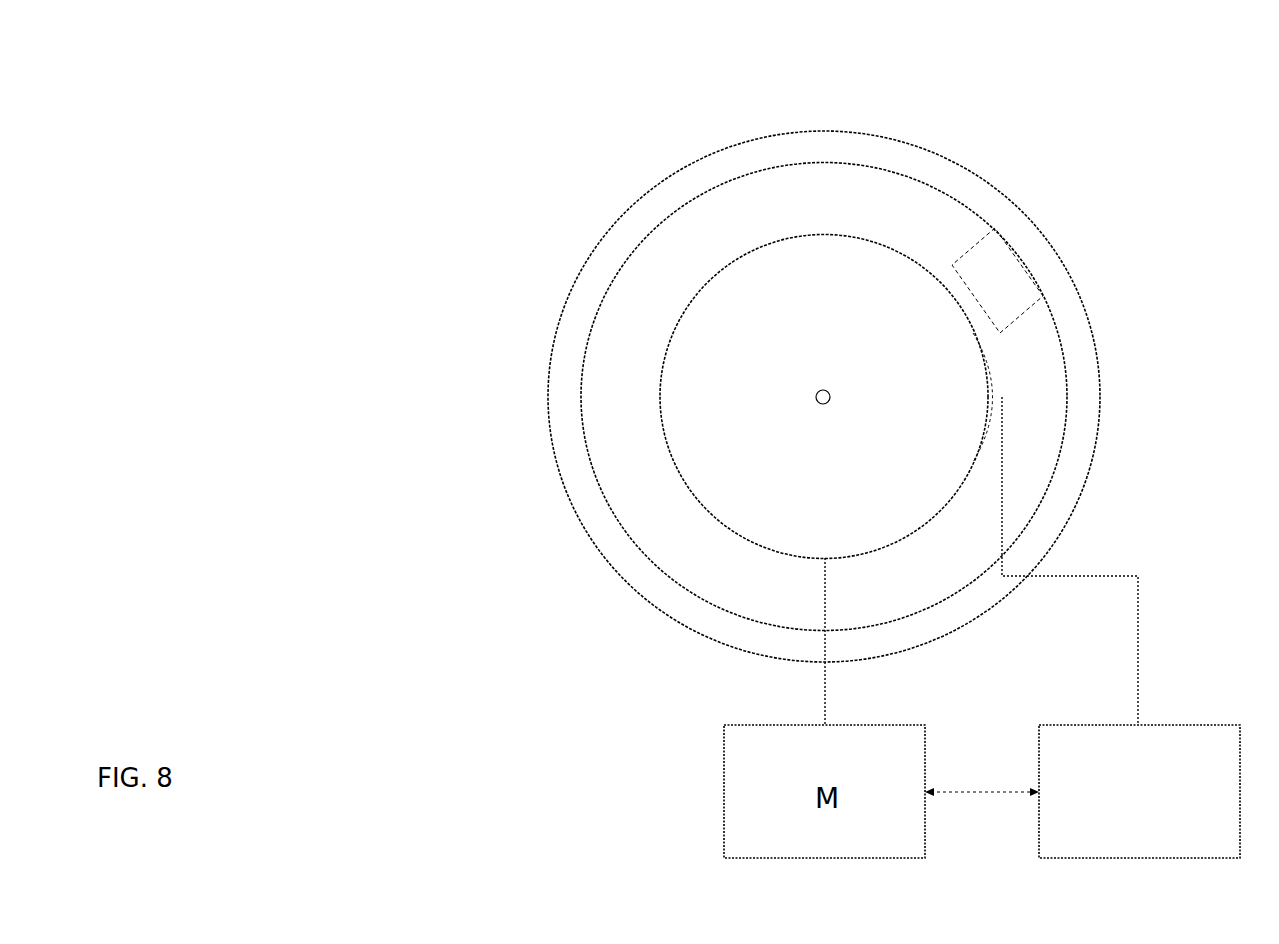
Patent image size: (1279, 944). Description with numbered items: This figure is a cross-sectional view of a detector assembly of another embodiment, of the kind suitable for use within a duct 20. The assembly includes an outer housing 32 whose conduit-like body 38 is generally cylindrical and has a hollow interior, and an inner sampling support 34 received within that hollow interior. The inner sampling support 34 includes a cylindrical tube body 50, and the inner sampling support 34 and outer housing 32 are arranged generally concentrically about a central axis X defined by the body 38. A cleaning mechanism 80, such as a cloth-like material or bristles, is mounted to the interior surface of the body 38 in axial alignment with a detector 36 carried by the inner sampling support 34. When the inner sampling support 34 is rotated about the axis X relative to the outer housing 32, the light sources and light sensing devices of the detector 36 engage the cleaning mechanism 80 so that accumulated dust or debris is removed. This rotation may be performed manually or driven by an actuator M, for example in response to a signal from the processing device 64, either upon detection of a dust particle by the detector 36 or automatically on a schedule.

The duct 20 is at (438, 119).
The outer housing 32 is at (522, 398).
The body 38 is at (619, 232).
The inner sampling support 34 is at (668, 528).
The tube body 50 is at (848, 307).
The detector 36 is at (1018, 399).
The cleaning mechanism 80 is at (1010, 282).
The processing device 64 is at (1082, 627).